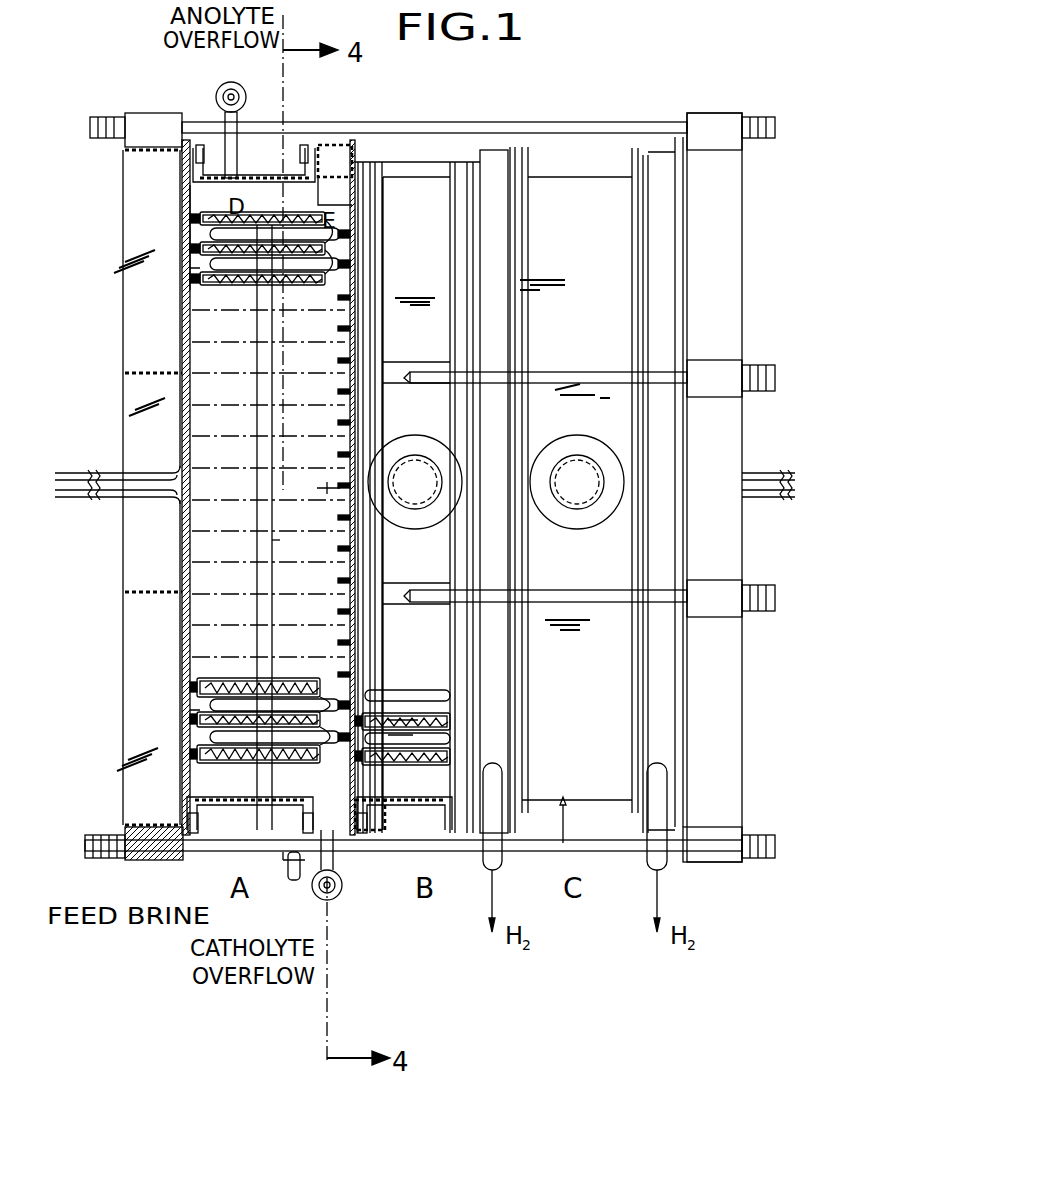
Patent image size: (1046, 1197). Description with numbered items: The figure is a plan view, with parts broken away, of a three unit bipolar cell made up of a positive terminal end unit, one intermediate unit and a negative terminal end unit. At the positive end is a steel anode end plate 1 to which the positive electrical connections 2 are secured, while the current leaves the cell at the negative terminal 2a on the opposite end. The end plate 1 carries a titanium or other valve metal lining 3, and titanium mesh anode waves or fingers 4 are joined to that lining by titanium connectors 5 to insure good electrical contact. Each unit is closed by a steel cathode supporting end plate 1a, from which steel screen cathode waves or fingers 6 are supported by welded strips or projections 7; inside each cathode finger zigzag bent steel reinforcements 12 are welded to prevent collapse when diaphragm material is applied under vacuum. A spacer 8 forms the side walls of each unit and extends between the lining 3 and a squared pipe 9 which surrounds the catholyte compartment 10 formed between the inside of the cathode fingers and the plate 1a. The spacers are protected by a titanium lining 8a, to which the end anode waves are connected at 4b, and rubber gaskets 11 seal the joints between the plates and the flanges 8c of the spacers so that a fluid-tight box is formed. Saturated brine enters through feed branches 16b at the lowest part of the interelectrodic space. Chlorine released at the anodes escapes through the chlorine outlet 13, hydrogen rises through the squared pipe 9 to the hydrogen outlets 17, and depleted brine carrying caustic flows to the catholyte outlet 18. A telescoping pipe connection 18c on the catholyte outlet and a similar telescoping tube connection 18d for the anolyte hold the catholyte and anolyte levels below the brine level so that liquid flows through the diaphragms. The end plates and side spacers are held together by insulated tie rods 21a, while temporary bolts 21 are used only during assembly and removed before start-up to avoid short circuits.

The positive (anode) end plate 1 is at (183, 555).
The cathode supporting end plate 1a is at (346, 590).
The positive electrical connections 2 is at (116, 488).
The negative terminal 2a is at (770, 494).
The valve metal lining 3 is at (190, 470).
The anode waves or fingers 4 is at (258, 197).
The connection of end anode waves to lining 4b is at (258, 822).
The titanium connectors 5 is at (186, 268).
The cathode waves or fingers 6 is at (262, 778).
The welded strips or projections 7 is at (352, 243).
The spacer 8 is at (230, 860).
The titanium lining of spacers 8a is at (188, 186).
The flanges of spacers 8c is at (300, 150).
The squared pipe 9 is at (340, 162).
The catholyte compartment 10 is at (330, 272).
The rubber gaskets 11 is at (322, 145).
The zigzag bent steel reinforcements 12 is at (247, 290).
The chlorine outlet 13 is at (418, 520).
The feed branches 16b is at (270, 552).
The hydrogen outlets 17 is at (502, 865).
The catholyte outlet 18 is at (308, 862).
The telescoping pipe connection 18c is at (342, 865).
The telescoping tube connection 18d is at (250, 80).
The temporary bolts 21 is at (203, 148).
The tie rods 21a is at (535, 122).